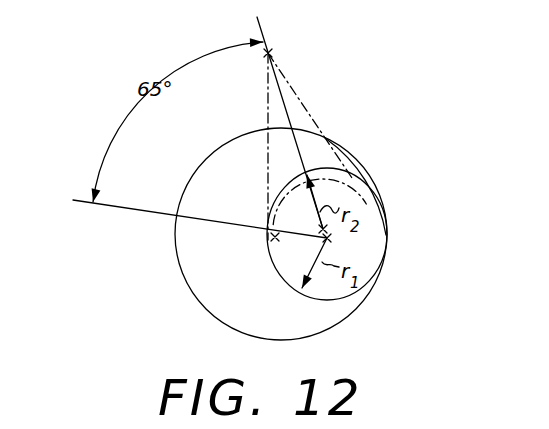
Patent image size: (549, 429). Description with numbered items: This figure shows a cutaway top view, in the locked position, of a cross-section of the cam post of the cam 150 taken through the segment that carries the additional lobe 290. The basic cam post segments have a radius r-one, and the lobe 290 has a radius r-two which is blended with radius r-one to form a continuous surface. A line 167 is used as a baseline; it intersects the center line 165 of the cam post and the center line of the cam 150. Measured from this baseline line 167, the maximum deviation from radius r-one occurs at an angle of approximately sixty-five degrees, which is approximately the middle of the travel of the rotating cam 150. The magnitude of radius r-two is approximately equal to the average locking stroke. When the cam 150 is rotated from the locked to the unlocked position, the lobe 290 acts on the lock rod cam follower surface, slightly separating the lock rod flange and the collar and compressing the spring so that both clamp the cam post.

The cam 150 is at (191, 291).
The center line of the cam post 165 is at (327, 238).
The line 167 is at (293, 242).
The lobe 290 is at (325, 138).